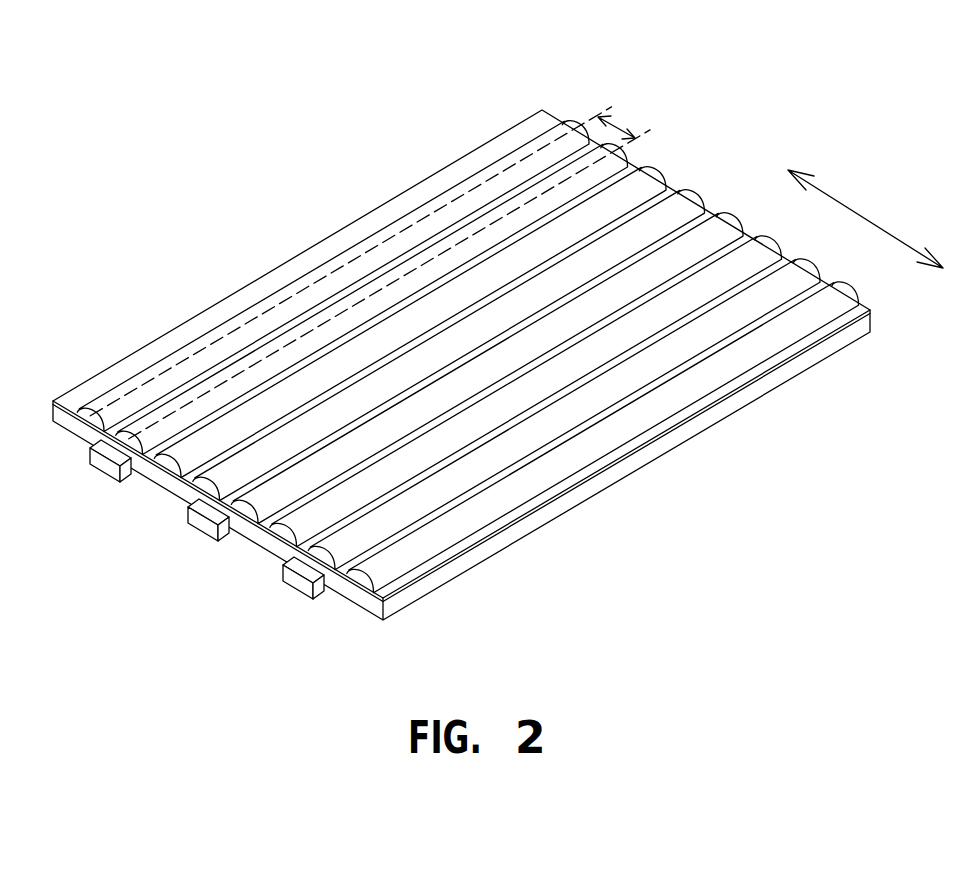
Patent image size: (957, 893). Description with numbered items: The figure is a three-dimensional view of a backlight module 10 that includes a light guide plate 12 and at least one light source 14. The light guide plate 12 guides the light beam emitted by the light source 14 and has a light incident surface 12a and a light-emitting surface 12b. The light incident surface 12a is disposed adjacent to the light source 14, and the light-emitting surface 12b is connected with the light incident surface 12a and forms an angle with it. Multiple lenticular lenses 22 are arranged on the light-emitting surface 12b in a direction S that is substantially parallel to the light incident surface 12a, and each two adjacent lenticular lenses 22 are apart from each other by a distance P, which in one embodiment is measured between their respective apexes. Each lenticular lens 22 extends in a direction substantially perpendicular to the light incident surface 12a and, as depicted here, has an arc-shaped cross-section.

The backlight module 10 is at (42, 77).
The light guide plate 12 is at (359, 224).
The light incident surface 12a is at (150, 474).
The light-emitting surface 12b is at (250, 290).
The light source 14 is at (200, 521).
The lenticular lenses 22 is at (700, 192).
The distance P is at (370, 273).
The direction S is at (865, 219).